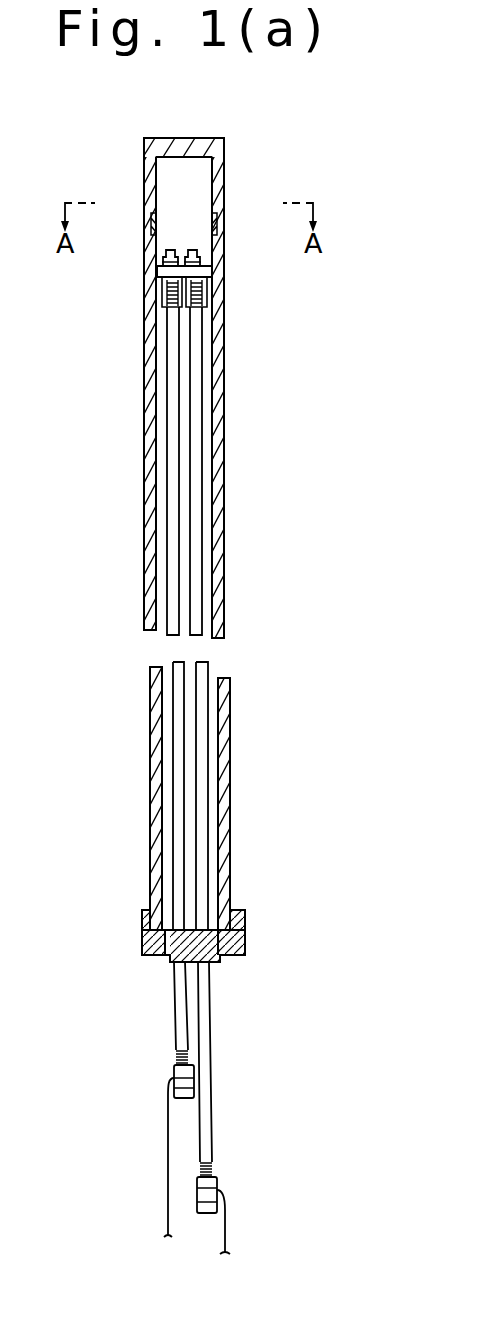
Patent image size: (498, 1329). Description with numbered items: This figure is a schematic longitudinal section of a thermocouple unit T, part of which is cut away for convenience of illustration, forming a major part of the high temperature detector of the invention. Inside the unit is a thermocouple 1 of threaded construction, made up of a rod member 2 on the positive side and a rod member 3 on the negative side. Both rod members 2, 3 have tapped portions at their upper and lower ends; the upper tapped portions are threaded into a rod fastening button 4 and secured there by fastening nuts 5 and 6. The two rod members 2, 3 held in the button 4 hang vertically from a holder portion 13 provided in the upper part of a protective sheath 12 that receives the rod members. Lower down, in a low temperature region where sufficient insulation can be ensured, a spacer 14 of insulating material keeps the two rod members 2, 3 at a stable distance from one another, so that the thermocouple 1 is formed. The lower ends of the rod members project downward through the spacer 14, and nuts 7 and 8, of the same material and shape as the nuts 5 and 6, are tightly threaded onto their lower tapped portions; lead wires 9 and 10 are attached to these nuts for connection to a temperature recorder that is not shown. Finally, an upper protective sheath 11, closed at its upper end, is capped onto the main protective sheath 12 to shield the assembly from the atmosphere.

The thermocouple 1 is at (173, 188).
The rod member on the positive side 2 is at (171, 249).
The rod member on the negative side 3 is at (194, 249).
The rod fastening button 4 is at (158, 272).
The fastening nut 5 is at (162, 262).
The fastening nut 6 is at (205, 262).
The nut 7 is at (173, 1072).
The nut 8 is at (217, 1183).
The lead wire 9 is at (168, 1183).
The lead wire 10 is at (226, 1228).
The upper protective sheath 11 is at (205, 137).
The protective sheath 12 is at (222, 405).
The holder portion 13 is at (207, 282).
The spacer 14 is at (232, 938).
The thermocouple unit T is at (118, 568).